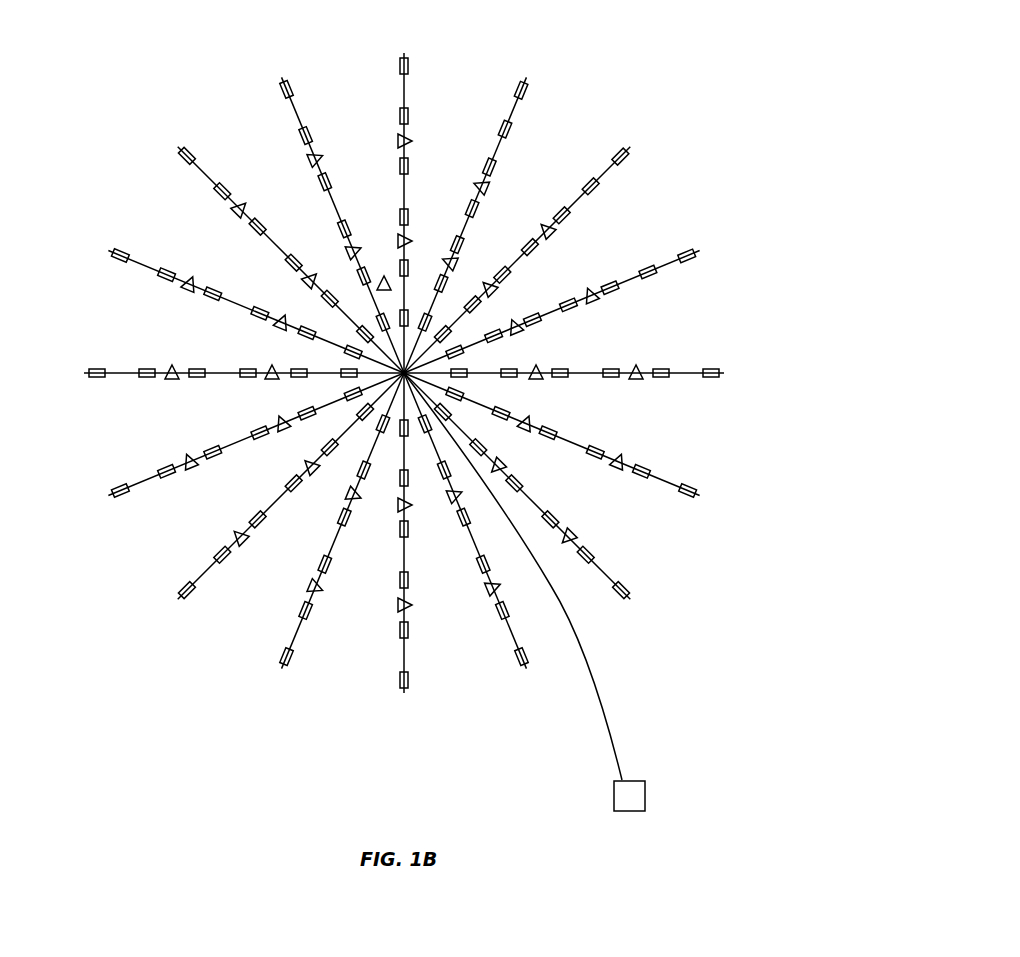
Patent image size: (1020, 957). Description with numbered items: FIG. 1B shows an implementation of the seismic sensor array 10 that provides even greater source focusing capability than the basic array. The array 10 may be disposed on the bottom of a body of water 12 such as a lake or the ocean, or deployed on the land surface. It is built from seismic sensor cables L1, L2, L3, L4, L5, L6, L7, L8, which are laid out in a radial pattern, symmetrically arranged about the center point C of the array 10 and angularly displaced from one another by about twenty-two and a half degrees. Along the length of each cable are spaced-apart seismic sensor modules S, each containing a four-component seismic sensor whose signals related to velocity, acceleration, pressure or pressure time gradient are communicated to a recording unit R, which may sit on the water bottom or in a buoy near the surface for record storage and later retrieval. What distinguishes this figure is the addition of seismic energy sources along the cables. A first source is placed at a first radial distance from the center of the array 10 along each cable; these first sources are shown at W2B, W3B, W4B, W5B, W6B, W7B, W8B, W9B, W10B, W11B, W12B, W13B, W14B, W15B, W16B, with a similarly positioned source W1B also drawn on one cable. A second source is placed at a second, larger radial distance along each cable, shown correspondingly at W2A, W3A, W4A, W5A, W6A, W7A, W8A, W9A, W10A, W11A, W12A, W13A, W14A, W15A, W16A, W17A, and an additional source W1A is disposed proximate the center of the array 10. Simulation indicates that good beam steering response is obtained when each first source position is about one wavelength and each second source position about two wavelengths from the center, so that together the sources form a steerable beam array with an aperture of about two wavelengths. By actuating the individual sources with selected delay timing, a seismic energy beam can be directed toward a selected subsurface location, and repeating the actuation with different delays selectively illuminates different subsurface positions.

The seismic sensor array 10 is at (97, 763).
The body of water 12 is at (793, 694).
The seismic sensor module S is at (404, 53).
The center point C is at (404, 373).
The recording unit R is at (645, 800).
The seismic sensor cable L1 is at (207, 574).
The seismic sensor cable L2 is at (292, 630).
The seismic sensor cable L3 is at (407, 656).
The seismic sensor cable L4 is at (514, 631).
The seismic sensor cable L5 is at (602, 573).
The seismic sensor cable L6 is at (667, 474).
The seismic sensor cable L7 is at (682, 373).
The seismic sensor cable L8 is at (668, 271).
The seismic energy source W1A is at (385, 276).
The wireless node W1B is at (308, 472).
The second seismic energy source W2A is at (245, 542).
The first seismic energy source W2B is at (350, 490).
The second seismic energy source W3A is at (321, 586).
The first seismic energy source W3B is at (397, 502).
The second seismic energy source W4A is at (398, 607).
The first seismic energy source W4B is at (448, 497).
The second seismic energy source W5A is at (488, 590).
The first seismic energy source W5B is at (500, 467).
The second seismic energy source W6A is at (570, 540).
The first seismic energy source W6B is at (527, 420).
The second seismic energy source W7A is at (618, 466).
The first seismic energy source W7B is at (537, 366).
The second seismic energy source W8A is at (637, 381).
The first seismic energy source W8B is at (514, 322).
The second seismic energy source W9A is at (592, 304).
The first seismic energy source W9B is at (489, 284).
The second seismic energy source W10A is at (551, 229).
The first seismic energy source W10B is at (451, 258).
The second seismic energy source W11A is at (488, 191).
The first seismic energy source W11B is at (408, 241).
The second seismic energy source W12A is at (397, 140).
The first seismic energy source W12B is at (347, 253).
The second seismic energy source W13A is at (307, 162).
The first seismic energy source W13B is at (306, 286).
The second seismic energy source W14A is at (238, 211).
The first seismic energy source W14B is at (279, 331).
The second seismic energy source W15A is at (185, 294).
The first seismic energy source W15B is at (270, 381).
The second seismic energy source W16A is at (168, 381).
The first seismic energy source W16B is at (282, 430).
The second seismic energy source W17A is at (185, 462).